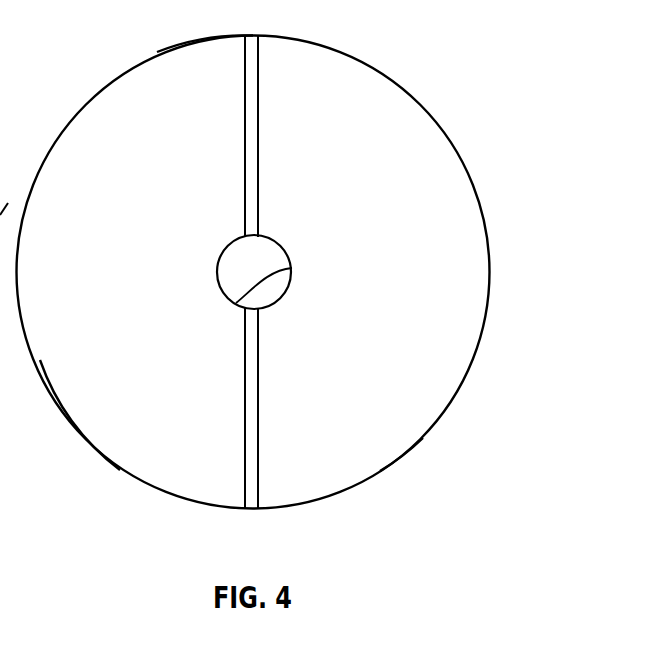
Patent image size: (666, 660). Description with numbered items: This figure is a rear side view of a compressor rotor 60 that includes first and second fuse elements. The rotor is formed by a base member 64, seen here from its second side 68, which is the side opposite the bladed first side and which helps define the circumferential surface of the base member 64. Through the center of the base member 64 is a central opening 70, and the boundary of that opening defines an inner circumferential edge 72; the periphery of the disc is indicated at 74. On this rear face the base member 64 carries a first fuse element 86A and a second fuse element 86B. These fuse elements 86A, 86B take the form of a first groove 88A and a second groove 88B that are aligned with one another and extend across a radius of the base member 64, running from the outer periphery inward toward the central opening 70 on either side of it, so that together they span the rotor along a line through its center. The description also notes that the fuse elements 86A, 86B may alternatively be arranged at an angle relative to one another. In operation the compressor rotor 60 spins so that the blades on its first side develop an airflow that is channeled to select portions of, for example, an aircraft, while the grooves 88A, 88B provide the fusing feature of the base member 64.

The compressor rotor 60 is at (80, 78).
The base member 64 is at (425, 439).
The second side 68 is at (138, 413).
The central opening 70 is at (241, 262).
The inner circumferential edge 72 is at (236, 303).
The peripheral edge 74 is at (157, 52).
The first fuse element 86A is at (271, 116).
The second fuse element 86B is at (270, 420).
The first groove 88A is at (245, 163).
The second groove 88B is at (245, 383).